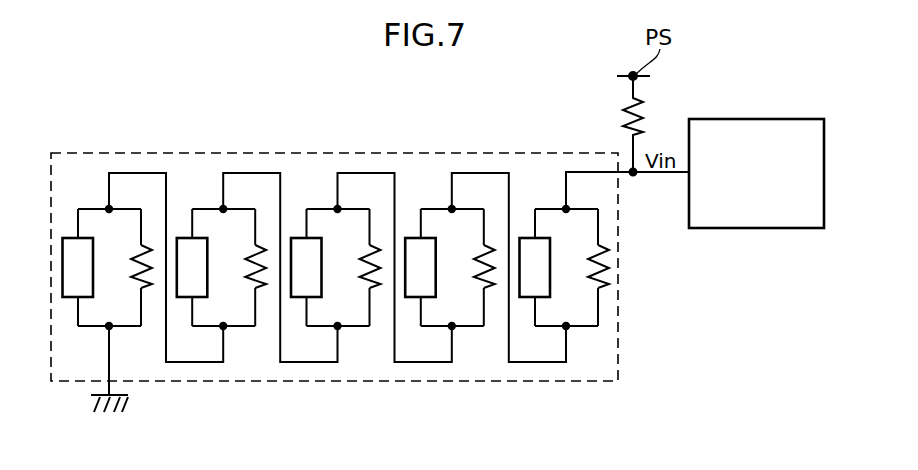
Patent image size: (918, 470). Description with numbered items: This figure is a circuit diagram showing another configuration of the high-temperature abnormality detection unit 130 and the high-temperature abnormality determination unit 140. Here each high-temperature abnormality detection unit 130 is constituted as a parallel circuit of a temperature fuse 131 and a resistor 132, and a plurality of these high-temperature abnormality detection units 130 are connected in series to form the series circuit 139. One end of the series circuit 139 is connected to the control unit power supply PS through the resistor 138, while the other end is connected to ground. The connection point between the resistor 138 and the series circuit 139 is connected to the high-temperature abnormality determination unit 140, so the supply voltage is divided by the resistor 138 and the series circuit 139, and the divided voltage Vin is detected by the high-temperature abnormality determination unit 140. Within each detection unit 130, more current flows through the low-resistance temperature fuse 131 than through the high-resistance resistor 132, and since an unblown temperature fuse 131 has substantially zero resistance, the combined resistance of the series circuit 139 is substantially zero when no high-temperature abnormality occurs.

The high-temperature abnormality detection unit 130 is at (642, 273).
The temperature fuse 131 is at (549, 288).
The resistor 132 is at (607, 262).
The resistor 138 is at (641, 118).
The series circuit 139 is at (407, 297).
The high-temperature abnormality determination unit 140 is at (777, 119).